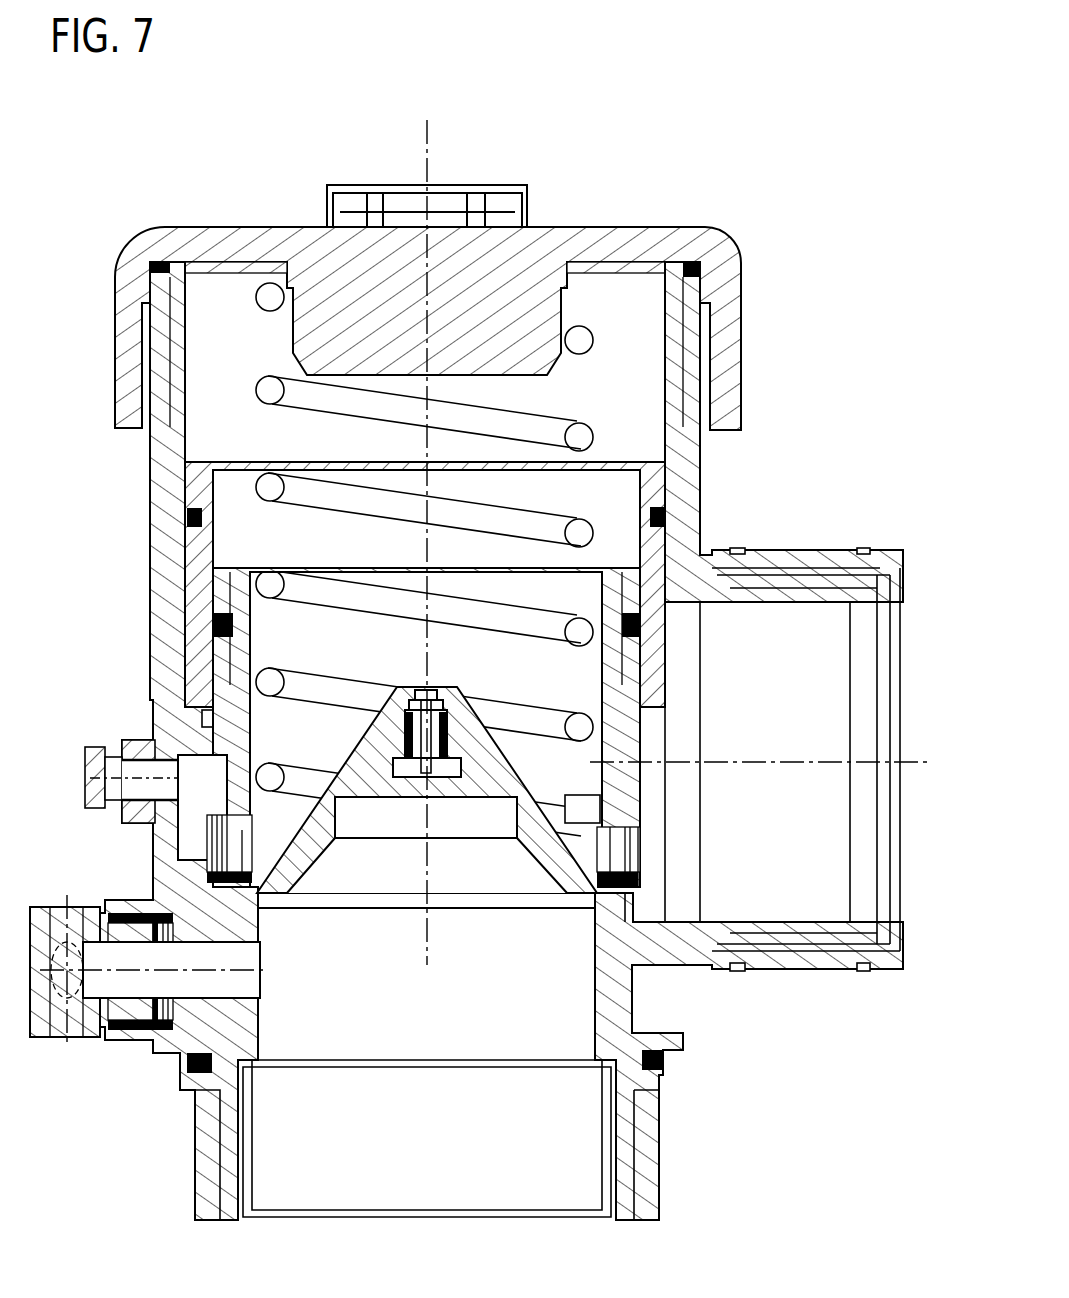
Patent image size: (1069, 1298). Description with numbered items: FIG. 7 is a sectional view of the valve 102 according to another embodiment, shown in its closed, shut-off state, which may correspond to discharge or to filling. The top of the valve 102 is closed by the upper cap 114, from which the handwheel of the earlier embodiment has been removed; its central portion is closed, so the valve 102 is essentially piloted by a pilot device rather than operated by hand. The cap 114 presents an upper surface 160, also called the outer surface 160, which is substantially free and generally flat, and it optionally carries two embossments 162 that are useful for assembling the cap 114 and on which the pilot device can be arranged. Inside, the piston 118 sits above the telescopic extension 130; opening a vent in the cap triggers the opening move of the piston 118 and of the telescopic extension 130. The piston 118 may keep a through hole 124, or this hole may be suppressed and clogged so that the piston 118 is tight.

The valve 102 is at (828, 162).
The upper cap 114 is at (228, 237).
The piston 118 is at (545, 858).
The through hole 124 is at (430, 770).
The telescopic extension 130 is at (207, 547).
The upper surface 160 is at (605, 227).
The embossment 162 is at (481, 185).